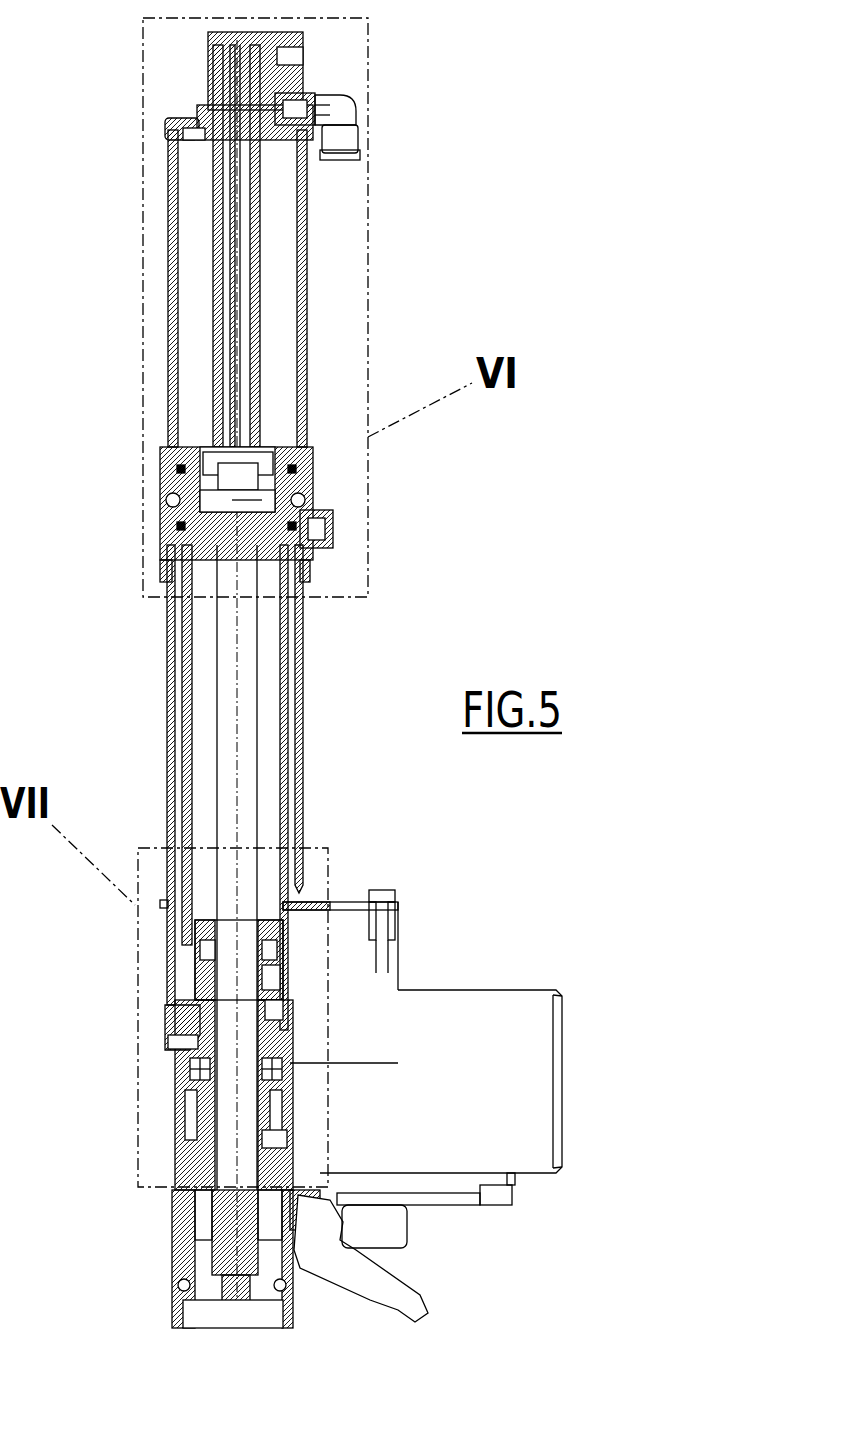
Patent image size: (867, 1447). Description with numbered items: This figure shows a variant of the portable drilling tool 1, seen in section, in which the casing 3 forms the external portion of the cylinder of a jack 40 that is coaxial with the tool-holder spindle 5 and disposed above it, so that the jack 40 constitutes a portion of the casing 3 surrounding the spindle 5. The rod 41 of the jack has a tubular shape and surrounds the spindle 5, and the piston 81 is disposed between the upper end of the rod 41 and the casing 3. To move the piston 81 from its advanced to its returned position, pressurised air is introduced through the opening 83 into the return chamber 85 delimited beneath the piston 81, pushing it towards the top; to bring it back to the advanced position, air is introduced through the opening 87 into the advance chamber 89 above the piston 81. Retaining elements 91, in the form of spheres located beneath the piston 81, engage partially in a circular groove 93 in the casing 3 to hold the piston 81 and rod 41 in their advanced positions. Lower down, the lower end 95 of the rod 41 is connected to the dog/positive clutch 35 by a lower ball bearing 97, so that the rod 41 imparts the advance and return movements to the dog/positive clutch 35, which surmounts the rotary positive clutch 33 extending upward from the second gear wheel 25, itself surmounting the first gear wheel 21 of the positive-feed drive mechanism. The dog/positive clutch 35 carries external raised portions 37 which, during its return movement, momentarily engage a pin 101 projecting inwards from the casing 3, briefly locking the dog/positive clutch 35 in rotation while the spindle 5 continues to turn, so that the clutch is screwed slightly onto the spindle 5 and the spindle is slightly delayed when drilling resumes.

The portable drilling tool 1 is at (310, 682).
The casing 3 is at (157, 712).
The tool-holder spindle 5 is at (260, 750).
The first gear wheel 21 is at (288, 1140).
The second gear wheel 25 is at (178, 1115).
The rotary positive clutch 33 is at (285, 1065).
The dog/positive clutch 35 is at (168, 1047).
The external raised portions 37 is at (185, 1060).
The jack 40 is at (312, 410).
The rod 41 is at (185, 661).
The piston 81 is at (300, 480).
The opening 83 is at (336, 531).
The return chamber 85 is at (175, 482).
The opening 87 is at (288, 98).
The advance chamber 89 is at (276, 263).
The retaining elements 91 is at (168, 498).
The circular groove 93 is at (166, 506).
The lower end of the rod 95 is at (282, 994).
The lower ball bearing 97 is at (285, 1023).
The pin 101 is at (170, 1022).